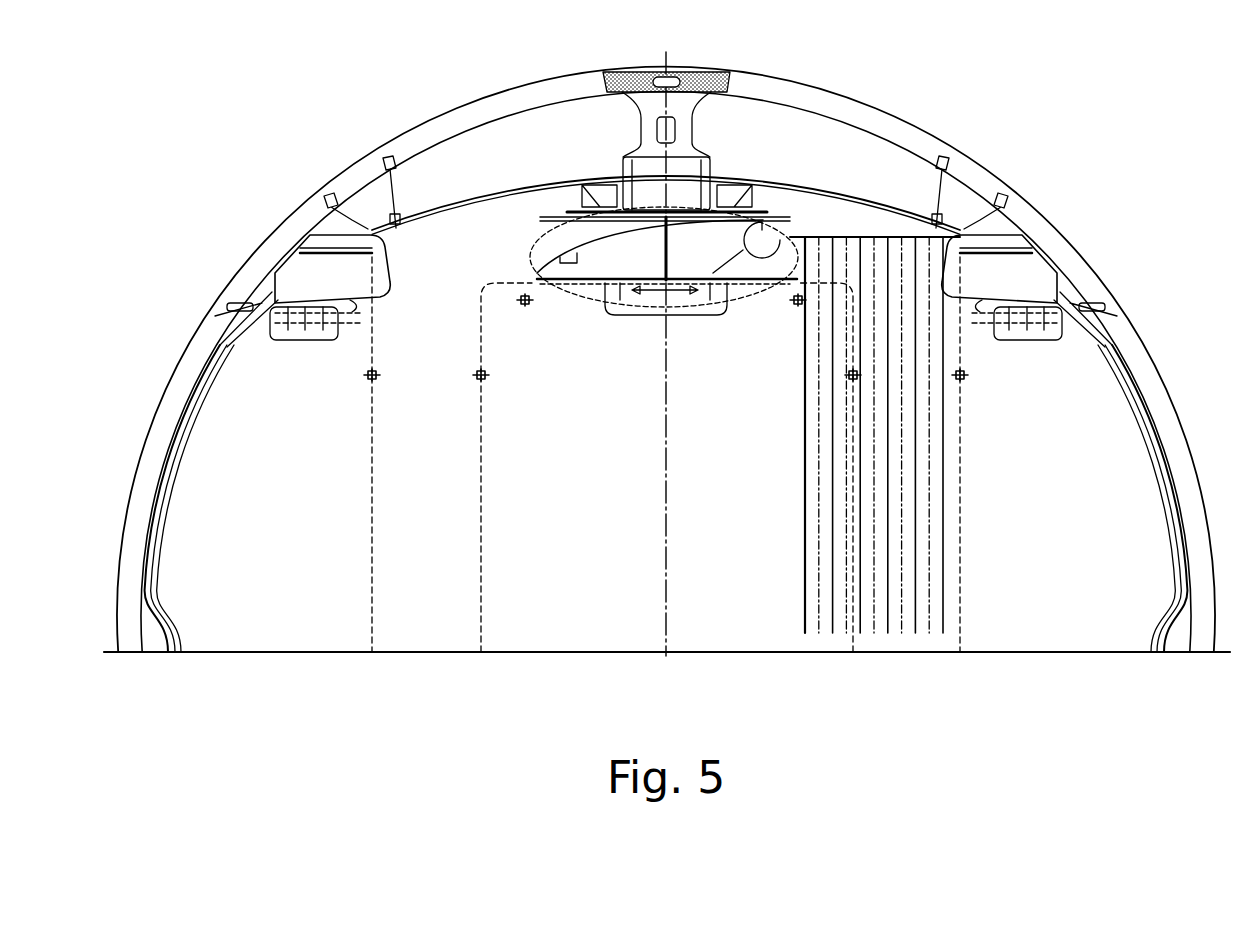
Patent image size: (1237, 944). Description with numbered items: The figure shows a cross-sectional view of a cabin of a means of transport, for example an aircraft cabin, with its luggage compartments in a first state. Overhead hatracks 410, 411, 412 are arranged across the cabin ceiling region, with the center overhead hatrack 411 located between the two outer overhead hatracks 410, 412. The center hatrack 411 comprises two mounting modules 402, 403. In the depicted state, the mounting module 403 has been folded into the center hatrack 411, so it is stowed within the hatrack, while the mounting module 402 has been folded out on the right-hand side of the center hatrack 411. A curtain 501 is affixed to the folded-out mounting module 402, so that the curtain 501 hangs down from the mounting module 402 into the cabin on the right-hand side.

The mounting module 402 is at (827, 202).
The mounting module 403 is at (687, 260).
The overhead hatrack 410 is at (300, 283).
The center overhead hatrack 411 is at (607, 227).
The overhead hatrack 412 is at (1030, 283).
The curtain 501 is at (943, 468).